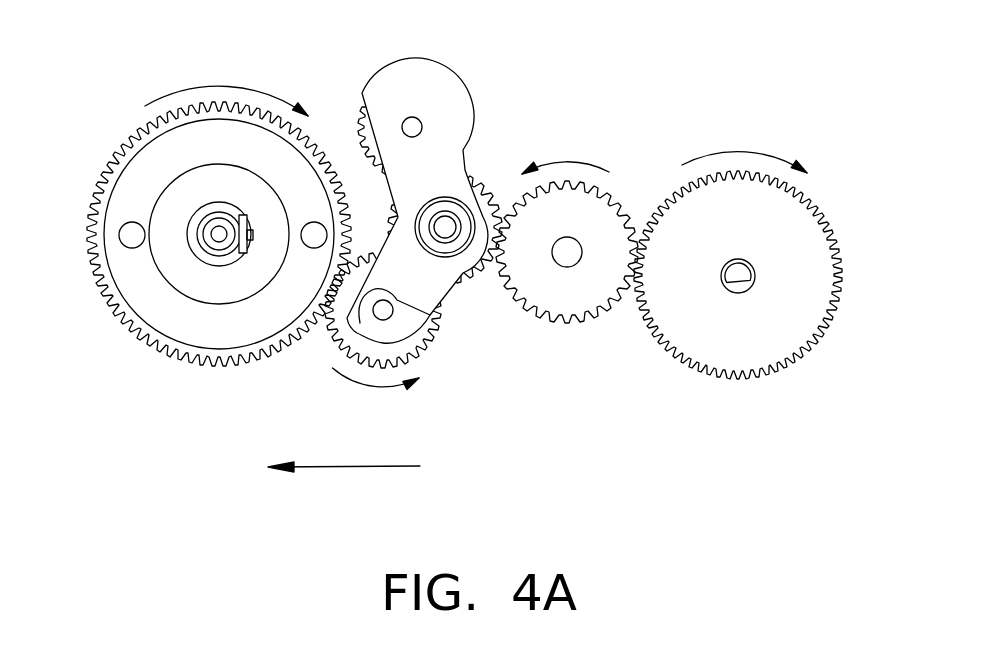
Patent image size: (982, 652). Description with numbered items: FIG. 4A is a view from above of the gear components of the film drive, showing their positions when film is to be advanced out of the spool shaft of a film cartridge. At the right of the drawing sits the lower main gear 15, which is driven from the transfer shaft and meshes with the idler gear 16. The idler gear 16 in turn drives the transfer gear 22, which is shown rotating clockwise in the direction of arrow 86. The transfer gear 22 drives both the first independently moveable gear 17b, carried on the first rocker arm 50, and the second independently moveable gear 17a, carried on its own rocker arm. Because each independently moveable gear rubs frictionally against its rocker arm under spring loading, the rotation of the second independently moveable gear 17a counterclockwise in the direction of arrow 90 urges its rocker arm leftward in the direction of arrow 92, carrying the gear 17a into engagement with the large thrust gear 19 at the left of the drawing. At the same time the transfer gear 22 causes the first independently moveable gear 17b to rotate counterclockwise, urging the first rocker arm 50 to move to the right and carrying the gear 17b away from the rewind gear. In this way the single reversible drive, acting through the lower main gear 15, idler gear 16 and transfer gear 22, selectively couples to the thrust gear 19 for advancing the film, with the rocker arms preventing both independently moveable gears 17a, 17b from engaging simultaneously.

The lower main gear 15 is at (740, 380).
The idler gear 16 is at (568, 325).
The second independently moveable gear 17a is at (420, 357).
The first independently moveable gear 17b is at (360, 100).
The thrust gear 19 is at (112, 343).
The transfer gear 22 is at (477, 197).
The first rocker arm 50 is at (470, 64).
The arrow indicating clockwise rotation of transfer gear 86 is at (448, 302).
The arrow indicating counterclockwise rotation of second independently moveable gear 90 is at (362, 387).
The arrow indicating leftward movement of second rocker arm 92 is at (357, 467).